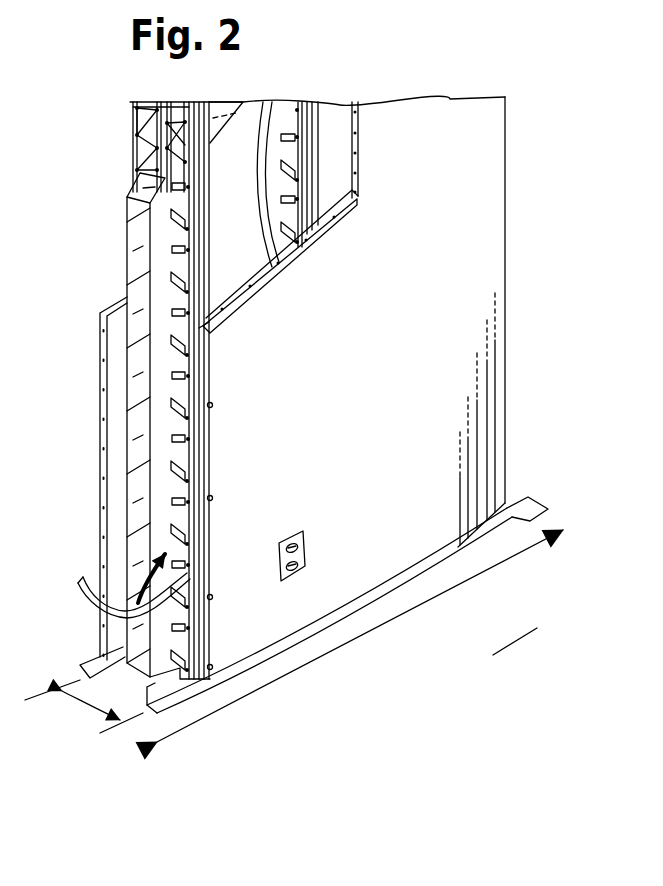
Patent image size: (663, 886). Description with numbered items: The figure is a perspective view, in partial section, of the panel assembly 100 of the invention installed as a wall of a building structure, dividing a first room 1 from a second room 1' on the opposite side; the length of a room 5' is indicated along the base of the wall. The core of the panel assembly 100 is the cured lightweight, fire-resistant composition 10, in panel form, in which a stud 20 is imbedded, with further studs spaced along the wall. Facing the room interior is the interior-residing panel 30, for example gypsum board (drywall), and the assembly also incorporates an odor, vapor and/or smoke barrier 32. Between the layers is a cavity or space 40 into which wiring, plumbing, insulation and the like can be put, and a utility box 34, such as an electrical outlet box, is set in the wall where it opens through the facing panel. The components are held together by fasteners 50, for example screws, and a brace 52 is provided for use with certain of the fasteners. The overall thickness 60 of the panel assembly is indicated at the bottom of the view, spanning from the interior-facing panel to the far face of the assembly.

The panel assembly 100 is at (522, 104).
The first room of a building structure 1 is at (52, 315).
The second room of the building structure 1' is at (284, 153).
The brace 52 is at (11, 106).
The lightweight, fire-resistant composition 10 is at (150, 432).
The stud 20 is at (160, 157).
The building/room-interior-residing/facing panel 30 is at (376, 486).
The odor, vapor and/or smoke barrier 32 is at (530, 522).
The utility box 34 is at (305, 548).
The cavity or space 40 is at (153, 577).
The fasteners 50 is at (210, 597).
The thickness of the panel assembly 60 is at (80, 703).
The length of a room 5' is at (360, 636).